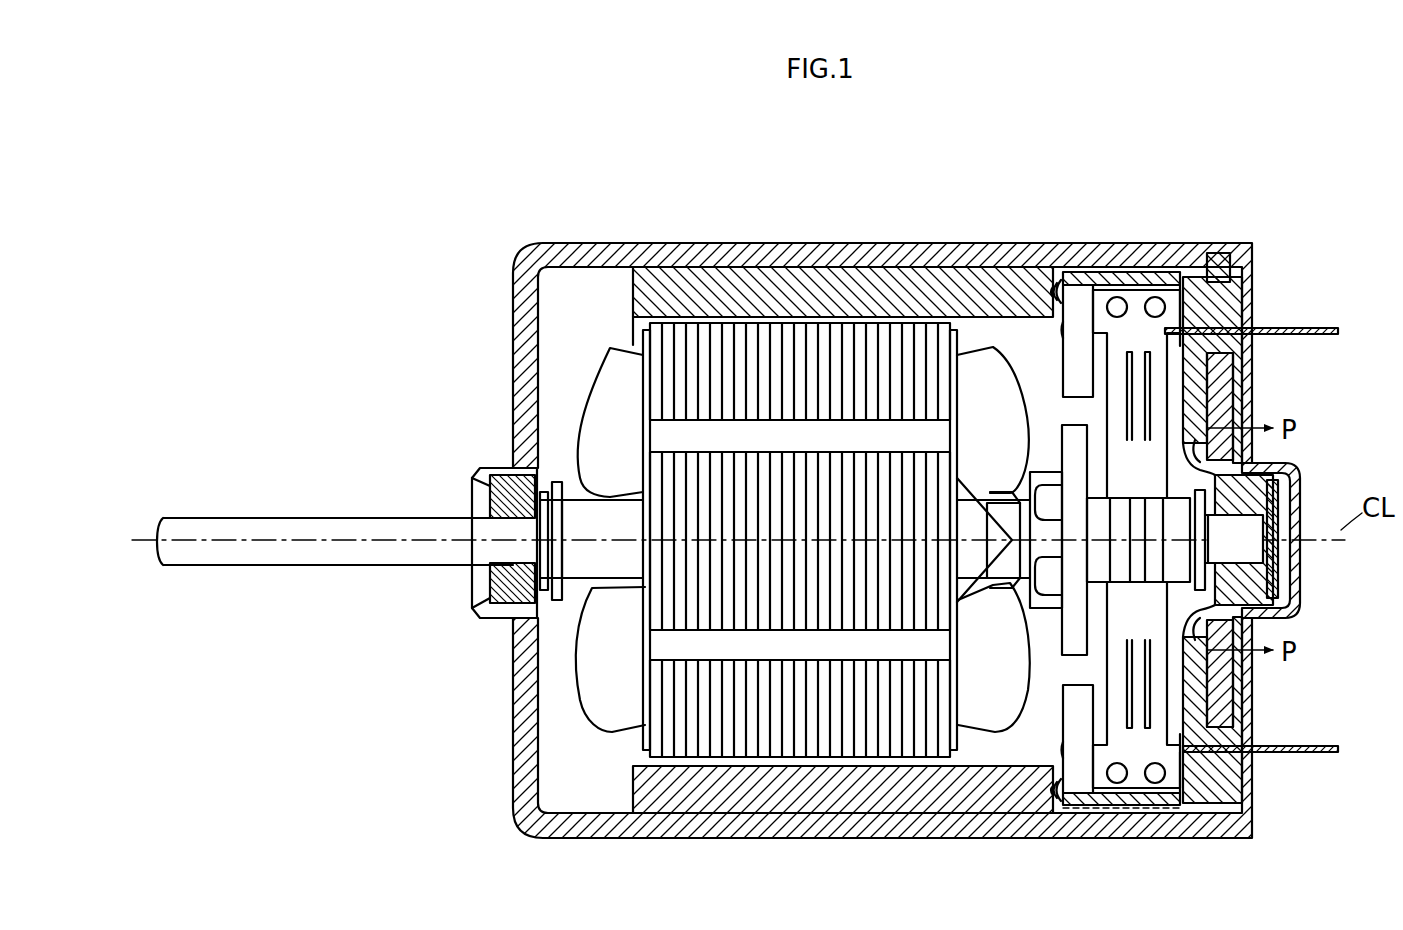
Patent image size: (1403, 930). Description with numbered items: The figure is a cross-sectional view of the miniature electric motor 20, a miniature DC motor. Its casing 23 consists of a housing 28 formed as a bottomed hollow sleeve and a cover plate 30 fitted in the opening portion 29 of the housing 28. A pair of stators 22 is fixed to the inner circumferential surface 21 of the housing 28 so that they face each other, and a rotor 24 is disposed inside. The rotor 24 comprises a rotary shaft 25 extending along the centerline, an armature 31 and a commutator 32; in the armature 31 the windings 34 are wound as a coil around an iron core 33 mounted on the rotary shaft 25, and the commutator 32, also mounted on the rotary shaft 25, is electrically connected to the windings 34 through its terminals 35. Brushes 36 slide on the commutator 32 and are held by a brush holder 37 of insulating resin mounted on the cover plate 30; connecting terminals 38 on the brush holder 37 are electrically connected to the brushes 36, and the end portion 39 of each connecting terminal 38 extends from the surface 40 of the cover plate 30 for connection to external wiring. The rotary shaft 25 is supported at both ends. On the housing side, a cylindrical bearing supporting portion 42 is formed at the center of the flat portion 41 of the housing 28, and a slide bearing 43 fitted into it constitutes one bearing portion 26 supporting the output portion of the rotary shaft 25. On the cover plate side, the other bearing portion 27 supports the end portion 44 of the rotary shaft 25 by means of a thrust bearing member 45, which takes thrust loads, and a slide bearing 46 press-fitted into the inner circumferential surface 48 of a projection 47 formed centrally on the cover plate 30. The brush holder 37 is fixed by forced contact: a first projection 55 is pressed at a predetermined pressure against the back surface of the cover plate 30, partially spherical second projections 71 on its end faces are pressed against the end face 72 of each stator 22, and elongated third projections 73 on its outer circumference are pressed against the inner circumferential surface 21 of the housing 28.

The miniature electric motor 20 is at (1268, 216).
The inner circumferential surface 21 is at (577, 280).
The stators 22 is at (640, 290).
The casing 23 is at (880, 241).
The rotor 24 is at (1002, 343).
The rotary shaft 25 is at (320, 516).
The bearing portion 26 is at (489, 461).
The bearing portion 27 is at (1264, 605).
The housing 28 is at (795, 244).
The opening portion 29 is at (1252, 263).
The cover plate 30 is at (1254, 395).
The armature 31 is at (584, 393).
The commutator 32 is at (1090, 652).
The iron core 33 is at (956, 426).
The windings 34 is at (609, 362).
The terminals 35 is at (1050, 481).
The brushes 36 is at (1107, 400).
The brush holder 37 is at (1248, 782).
The connecting terminals 38 is at (1244, 310).
The end portion 39 is at (1326, 328).
The surface 40 is at (1246, 366).
The flat portion 41 is at (514, 348).
The bearing supporting portion 42 is at (483, 469).
The slide bearing 43 is at (480, 507).
The end portion 44 is at (1224, 553).
The thrust bearing member 45 is at (1279, 568).
The slide bearing 46 is at (1222, 483).
The projection 47 is at (1290, 491).
The inner circumferential surface 48 is at (1286, 464).
The first projection 55 is at (1202, 440).
The second projections 71 is at (1056, 284).
The end face 72 is at (1062, 326).
The third projections 73 is at (1152, 272).